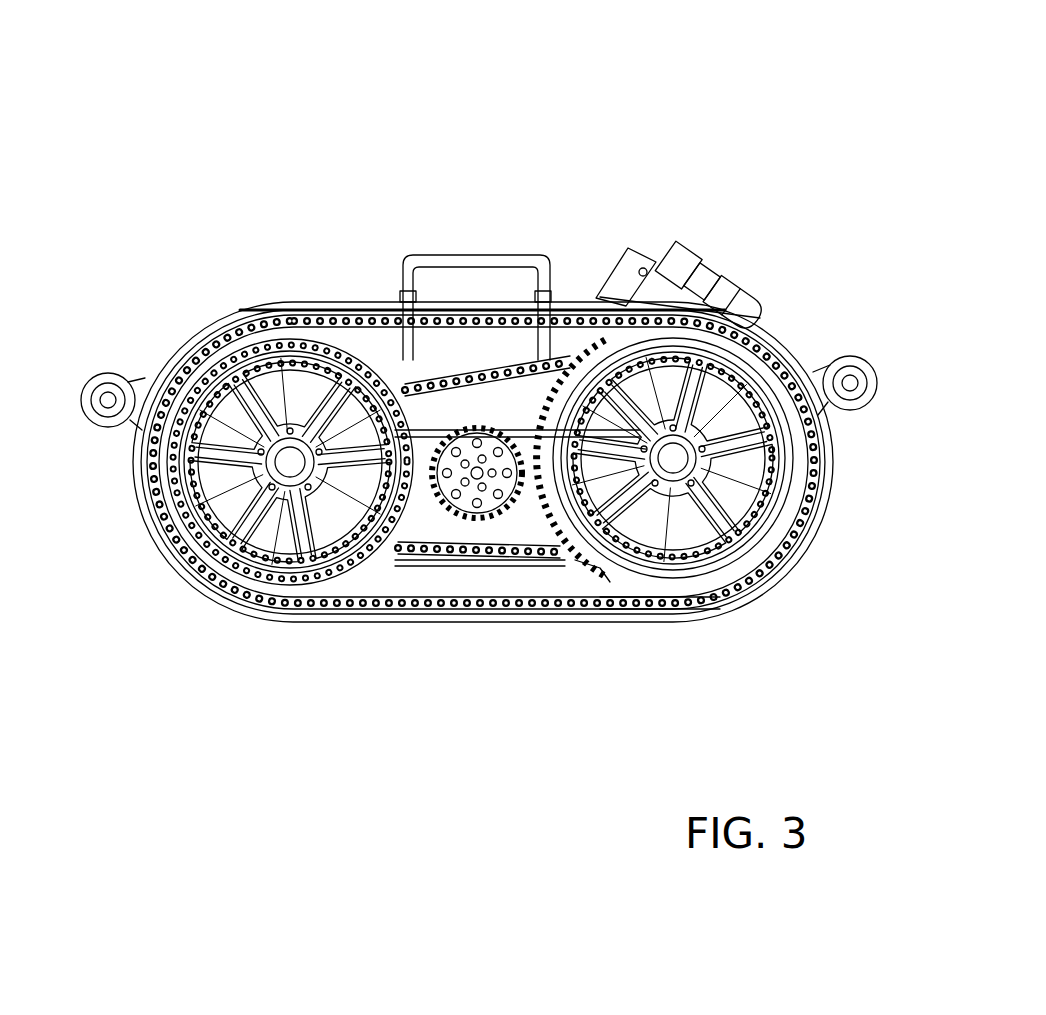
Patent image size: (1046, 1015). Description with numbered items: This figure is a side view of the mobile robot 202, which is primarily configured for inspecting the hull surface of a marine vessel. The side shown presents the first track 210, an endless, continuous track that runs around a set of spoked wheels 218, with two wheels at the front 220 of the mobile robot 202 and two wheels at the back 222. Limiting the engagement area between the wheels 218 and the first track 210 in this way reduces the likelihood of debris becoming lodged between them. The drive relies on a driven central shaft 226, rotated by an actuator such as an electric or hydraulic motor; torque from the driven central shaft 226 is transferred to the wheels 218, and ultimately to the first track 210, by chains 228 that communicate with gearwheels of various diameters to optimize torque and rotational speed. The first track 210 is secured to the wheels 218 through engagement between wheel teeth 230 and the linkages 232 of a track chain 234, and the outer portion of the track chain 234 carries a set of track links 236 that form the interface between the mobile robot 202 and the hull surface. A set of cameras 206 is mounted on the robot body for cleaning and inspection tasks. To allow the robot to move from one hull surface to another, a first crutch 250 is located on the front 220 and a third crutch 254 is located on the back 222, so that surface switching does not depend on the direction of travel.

The mobile robot 202 is at (627, 98).
The cameras 206 is at (735, 295).
The first track 210 is at (793, 565).
The wheels 218 is at (546, 505).
The front 220 is at (800, 328).
The back 222 is at (151, 347).
The driven central shaft 226 is at (478, 478).
The chains 228 is at (487, 550).
The wheel teeth 230 is at (580, 570).
The linkages 232 is at (701, 604).
The track chain 234 is at (225, 590).
The track links 236 is at (165, 557).
The first crutch 250 is at (845, 397).
The third crutch 254 is at (120, 417).